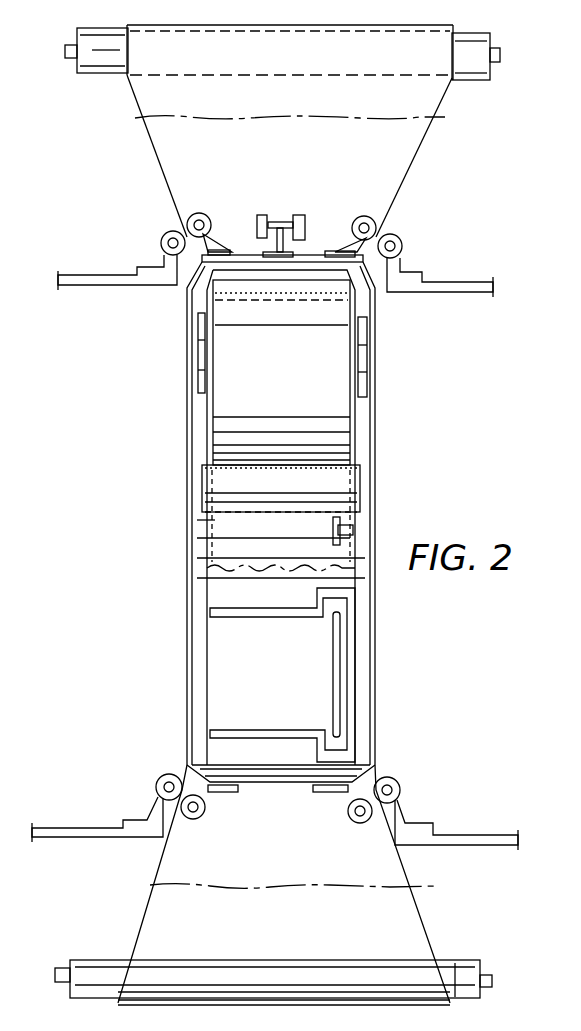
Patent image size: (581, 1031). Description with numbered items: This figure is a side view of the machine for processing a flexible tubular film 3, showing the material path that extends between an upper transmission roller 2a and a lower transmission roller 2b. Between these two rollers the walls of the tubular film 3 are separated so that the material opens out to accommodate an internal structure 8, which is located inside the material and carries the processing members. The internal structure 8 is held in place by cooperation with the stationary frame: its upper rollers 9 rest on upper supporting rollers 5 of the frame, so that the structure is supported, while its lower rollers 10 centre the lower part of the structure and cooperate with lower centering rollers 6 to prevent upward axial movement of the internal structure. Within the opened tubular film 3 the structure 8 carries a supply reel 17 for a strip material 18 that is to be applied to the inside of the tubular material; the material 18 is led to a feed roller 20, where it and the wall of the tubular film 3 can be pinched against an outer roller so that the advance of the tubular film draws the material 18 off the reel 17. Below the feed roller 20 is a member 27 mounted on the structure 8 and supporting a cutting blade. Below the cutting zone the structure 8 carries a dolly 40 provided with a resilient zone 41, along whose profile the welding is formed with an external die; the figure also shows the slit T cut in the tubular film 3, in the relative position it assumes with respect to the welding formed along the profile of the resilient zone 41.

The upper transmission roller 2a is at (108, 58).
The lower transmission roller 2b is at (100, 960).
The tubular film 3 is at (150, 142).
The upper supporting rollers 5 is at (166, 231).
The lower centering rollers 6 is at (162, 777).
The internal structure 8 is at (316, 248).
The upper rollers 9 is at (208, 215).
The lower rollers 10 is at (196, 820).
The supply reel 17 is at (220, 405).
The material 18 is at (352, 355).
The feed roller 20 is at (336, 462).
The member 27 is at (205, 520).
The dolly 40 is at (208, 593).
The resilient zone 41 is at (255, 620).
The slit T is at (333, 672).